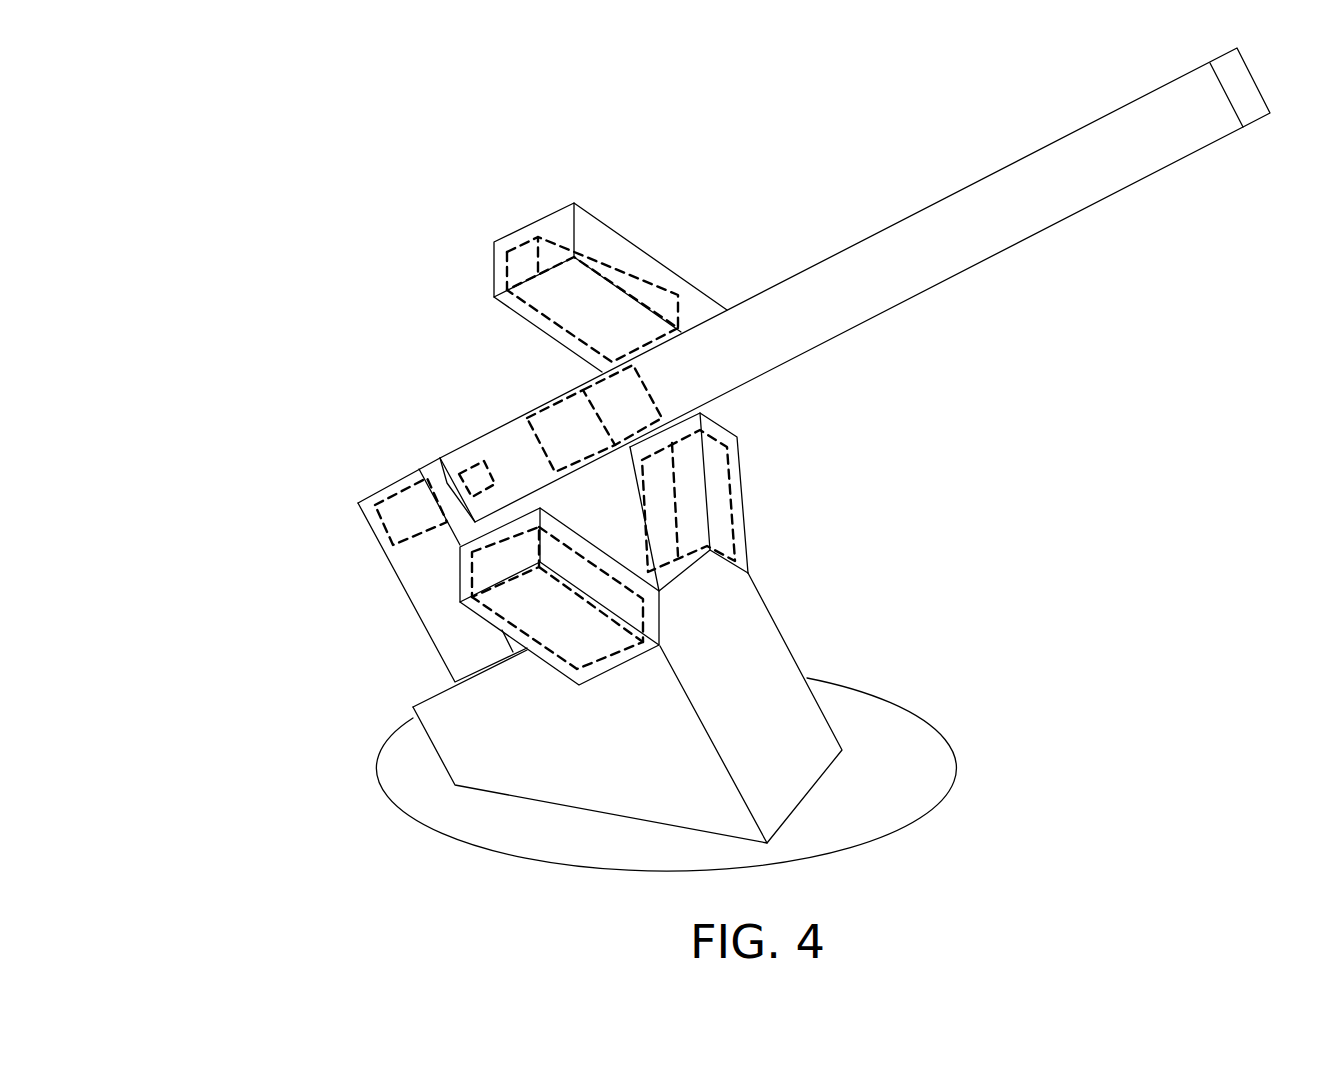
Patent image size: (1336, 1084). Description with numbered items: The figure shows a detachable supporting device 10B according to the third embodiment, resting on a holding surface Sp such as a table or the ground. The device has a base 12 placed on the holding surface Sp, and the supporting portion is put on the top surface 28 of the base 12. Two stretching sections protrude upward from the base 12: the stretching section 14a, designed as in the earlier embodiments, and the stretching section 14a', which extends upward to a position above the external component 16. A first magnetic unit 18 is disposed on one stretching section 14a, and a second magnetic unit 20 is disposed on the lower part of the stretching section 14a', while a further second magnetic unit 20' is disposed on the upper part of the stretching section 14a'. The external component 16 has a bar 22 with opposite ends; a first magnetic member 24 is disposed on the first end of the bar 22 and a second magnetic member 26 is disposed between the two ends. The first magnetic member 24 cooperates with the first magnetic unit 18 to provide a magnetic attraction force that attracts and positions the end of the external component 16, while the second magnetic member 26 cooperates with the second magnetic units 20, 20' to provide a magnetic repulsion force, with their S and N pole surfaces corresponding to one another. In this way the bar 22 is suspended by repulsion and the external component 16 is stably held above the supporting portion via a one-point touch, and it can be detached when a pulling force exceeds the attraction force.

The detachable supporting device 10B is at (401, 143).
The base 12 is at (502, 757).
The stretching section 14a is at (394, 623).
The stretching section 14a' is at (780, 502).
The external component 16 is at (863, 257).
The first magnetic unit 18 is at (393, 515).
The second magnetic unit 20 is at (592, 472).
The second magnetic unit 20' is at (610, 232).
The bar 22 is at (1063, 203).
The first magnetic member 24 is at (480, 462).
The second magnetic member 26 is at (648, 389).
The top surface 28 is at (438, 692).
The holding surface Sp is at (905, 794).